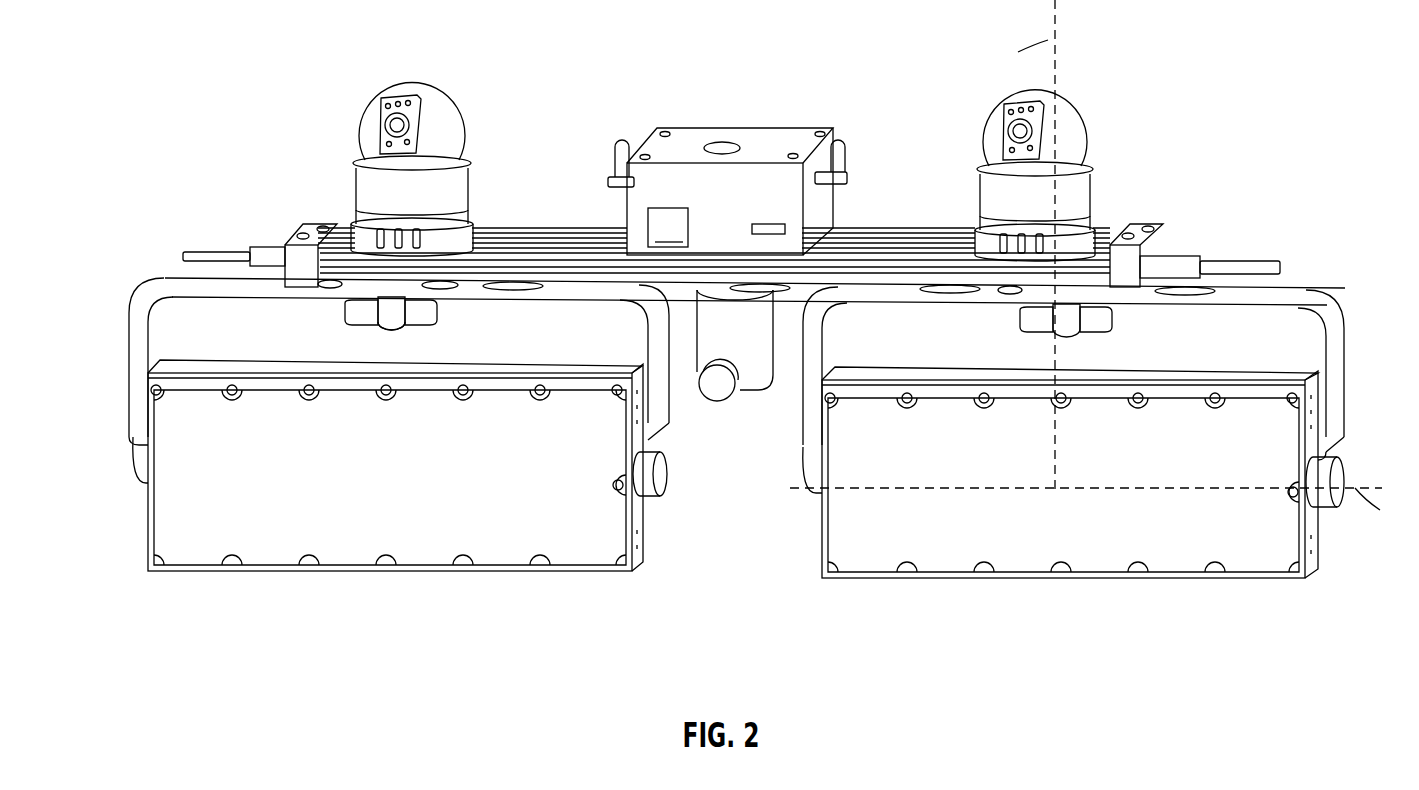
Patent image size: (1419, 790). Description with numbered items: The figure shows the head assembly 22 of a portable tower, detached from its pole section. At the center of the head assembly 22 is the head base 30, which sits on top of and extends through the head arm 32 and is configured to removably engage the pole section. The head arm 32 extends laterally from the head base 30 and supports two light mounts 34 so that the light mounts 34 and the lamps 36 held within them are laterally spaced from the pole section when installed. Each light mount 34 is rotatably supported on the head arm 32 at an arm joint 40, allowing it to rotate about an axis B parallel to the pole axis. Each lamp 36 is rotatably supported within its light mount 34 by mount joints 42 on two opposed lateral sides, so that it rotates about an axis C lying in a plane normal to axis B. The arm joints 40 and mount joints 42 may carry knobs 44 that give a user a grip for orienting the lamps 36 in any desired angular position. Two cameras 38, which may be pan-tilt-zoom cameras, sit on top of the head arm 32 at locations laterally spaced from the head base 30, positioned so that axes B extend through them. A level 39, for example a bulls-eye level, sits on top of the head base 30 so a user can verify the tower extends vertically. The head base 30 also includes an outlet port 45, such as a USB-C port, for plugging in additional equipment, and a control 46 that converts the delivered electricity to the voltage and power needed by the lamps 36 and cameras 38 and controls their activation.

The head assembly 22 is at (733, 306).
The head base 30 is at (727, 220).
The head arm 32 is at (903, 233).
The light mount 34 is at (123, 357).
The lamp 36 is at (645, 572).
The camera 38 is at (350, 108).
The level 39 is at (714, 143).
The arm joint 40 is at (1130, 326).
The mount joint 42 is at (1356, 450).
The knob 44 is at (675, 488).
The outlet port 45 is at (757, 214).
The control 46 is at (668, 227).